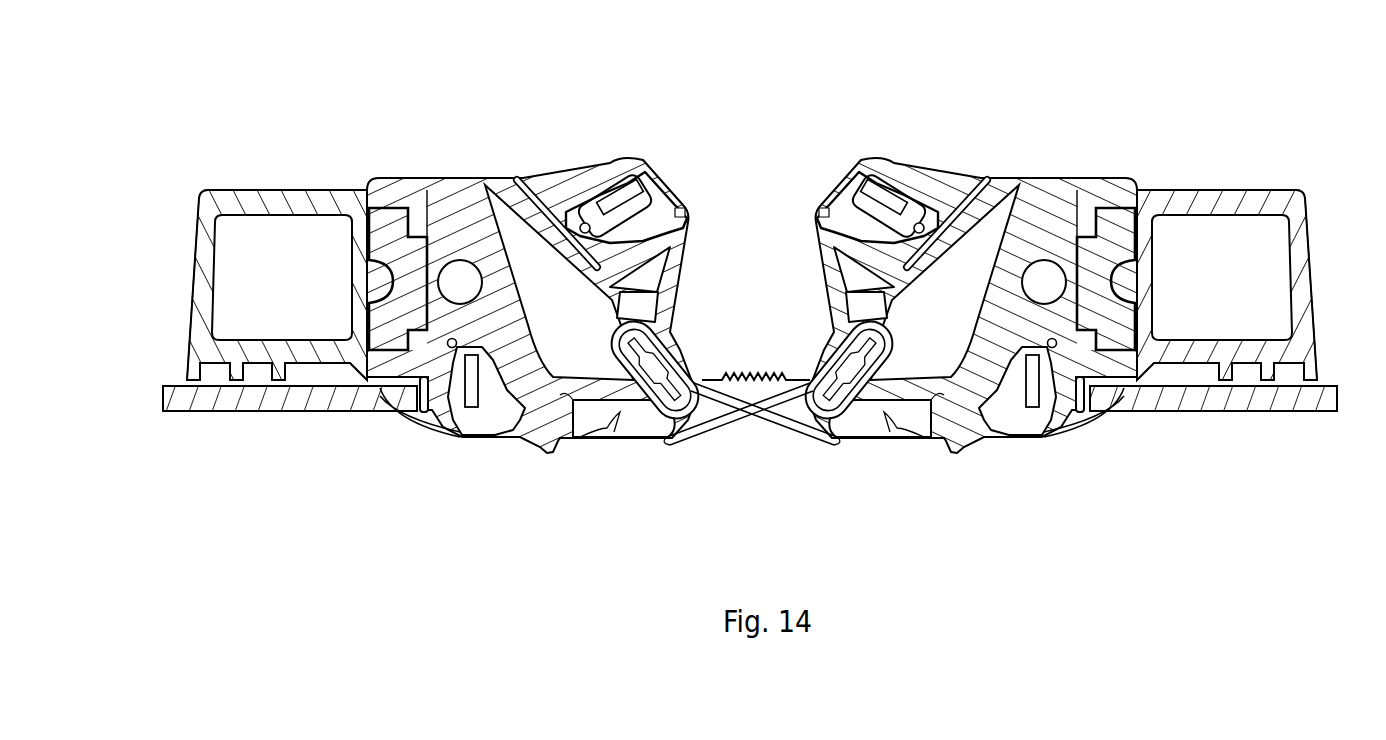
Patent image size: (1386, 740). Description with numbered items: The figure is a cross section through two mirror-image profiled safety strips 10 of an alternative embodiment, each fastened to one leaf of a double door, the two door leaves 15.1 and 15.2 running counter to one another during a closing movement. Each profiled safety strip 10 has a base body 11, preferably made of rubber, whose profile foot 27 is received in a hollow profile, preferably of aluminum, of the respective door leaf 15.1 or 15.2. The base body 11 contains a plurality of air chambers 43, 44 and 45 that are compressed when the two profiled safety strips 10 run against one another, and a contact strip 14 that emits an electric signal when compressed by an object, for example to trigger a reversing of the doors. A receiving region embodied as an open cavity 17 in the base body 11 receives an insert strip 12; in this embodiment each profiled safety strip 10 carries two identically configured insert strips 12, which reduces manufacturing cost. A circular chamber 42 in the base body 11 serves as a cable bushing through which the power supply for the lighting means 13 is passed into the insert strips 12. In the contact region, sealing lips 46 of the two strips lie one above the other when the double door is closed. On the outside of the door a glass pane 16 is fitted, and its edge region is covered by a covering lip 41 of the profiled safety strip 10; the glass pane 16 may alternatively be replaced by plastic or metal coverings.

The profiled safety strip 10 is at (395, 613).
The base body 11 is at (398, 193).
The insert strip 12 is at (648, 182).
The lighting means 13 is at (650, 188).
The contact strip 14 is at (668, 428).
The door leaf 15.1 is at (215, 213).
The door leaf 15.2 is at (1252, 193).
The glass pane 16 is at (273, 400).
The open cavity 17 is at (462, 425).
The profile foot 27 is at (386, 232).
The covering lip 41 is at (393, 412).
The circular chamber 42 is at (472, 272).
The air chamber 43 is at (567, 200).
The air chamber 44 is at (573, 438).
The air chamber 45 is at (620, 438).
The sealing lip 46 is at (717, 417).